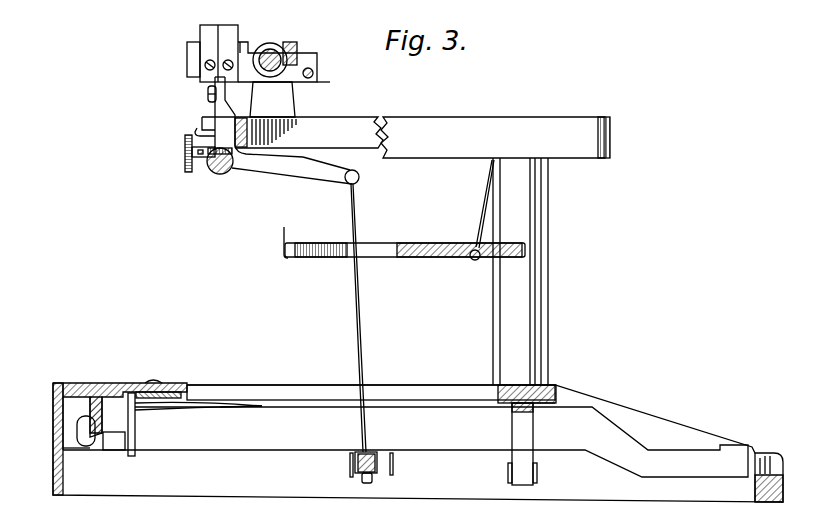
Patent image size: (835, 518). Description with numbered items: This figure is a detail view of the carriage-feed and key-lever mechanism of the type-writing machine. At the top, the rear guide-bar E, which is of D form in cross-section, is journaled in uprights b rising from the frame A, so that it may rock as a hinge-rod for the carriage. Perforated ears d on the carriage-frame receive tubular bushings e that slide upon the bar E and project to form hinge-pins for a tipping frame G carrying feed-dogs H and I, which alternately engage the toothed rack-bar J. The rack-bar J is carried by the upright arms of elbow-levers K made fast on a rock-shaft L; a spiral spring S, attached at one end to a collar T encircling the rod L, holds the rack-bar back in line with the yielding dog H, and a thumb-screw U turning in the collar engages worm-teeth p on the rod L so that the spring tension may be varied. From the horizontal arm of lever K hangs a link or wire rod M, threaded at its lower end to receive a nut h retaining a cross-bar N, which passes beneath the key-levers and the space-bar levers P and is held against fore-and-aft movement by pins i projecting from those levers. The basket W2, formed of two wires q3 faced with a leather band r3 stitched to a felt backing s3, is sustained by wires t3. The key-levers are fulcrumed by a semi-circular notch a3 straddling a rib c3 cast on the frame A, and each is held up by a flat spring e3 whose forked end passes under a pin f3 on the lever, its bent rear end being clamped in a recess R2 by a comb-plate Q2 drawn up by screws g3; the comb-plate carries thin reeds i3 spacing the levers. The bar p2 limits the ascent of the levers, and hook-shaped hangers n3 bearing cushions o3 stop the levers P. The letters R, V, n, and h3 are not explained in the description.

The feed-dog H is at (210, 37).
The plate R is at (185, 60).
The screws n is at (205, 68).
The feed-dog I is at (241, 50).
The guide-bar E is at (269, 55).
The tubular bushings e is at (287, 45).
The perforated lugs or ears d is at (310, 55).
The tipping frame G is at (314, 68).
The plate edge V is at (333, 85).
The uprights b is at (272, 99).
The rack-bar J is at (208, 93).
The spring S is at (197, 128).
The thumb-screw U is at (184, 152).
The collar T is at (208, 170).
The rock-shaft or rod L is at (216, 174).
The worm-teeth p is at (232, 170).
The elbow-levers K is at (325, 182).
The frame A is at (406, 137).
The link or wire rod M is at (371, 318).
The basket or guard W2 is at (405, 230).
The leather band r3 is at (319, 265).
The wires q3 is at (441, 258).
The backing s3 is at (300, 236).
The wires t3 is at (255, 233).
The levers P is at (418, 442).
The bolts or screws g3 is at (153, 382).
The comb-plate Q2 is at (138, 392).
The recess R2 is at (122, 395).
The rib c3 is at (92, 411).
The semi-circular notch a3 is at (92, 438).
The block h3 is at (114, 443).
The thin flat pins or reeds i3 is at (132, 457).
The flat springs e3 is at (192, 408).
The pin or screw f3 is at (226, 402).
The cross-bar N is at (378, 462).
The pins i is at (346, 464).
The nut h is at (372, 480).
The hook-shaped hanger n3 is at (515, 444).
The cushion o3 is at (538, 472).
The bar p2 is at (536, 408).